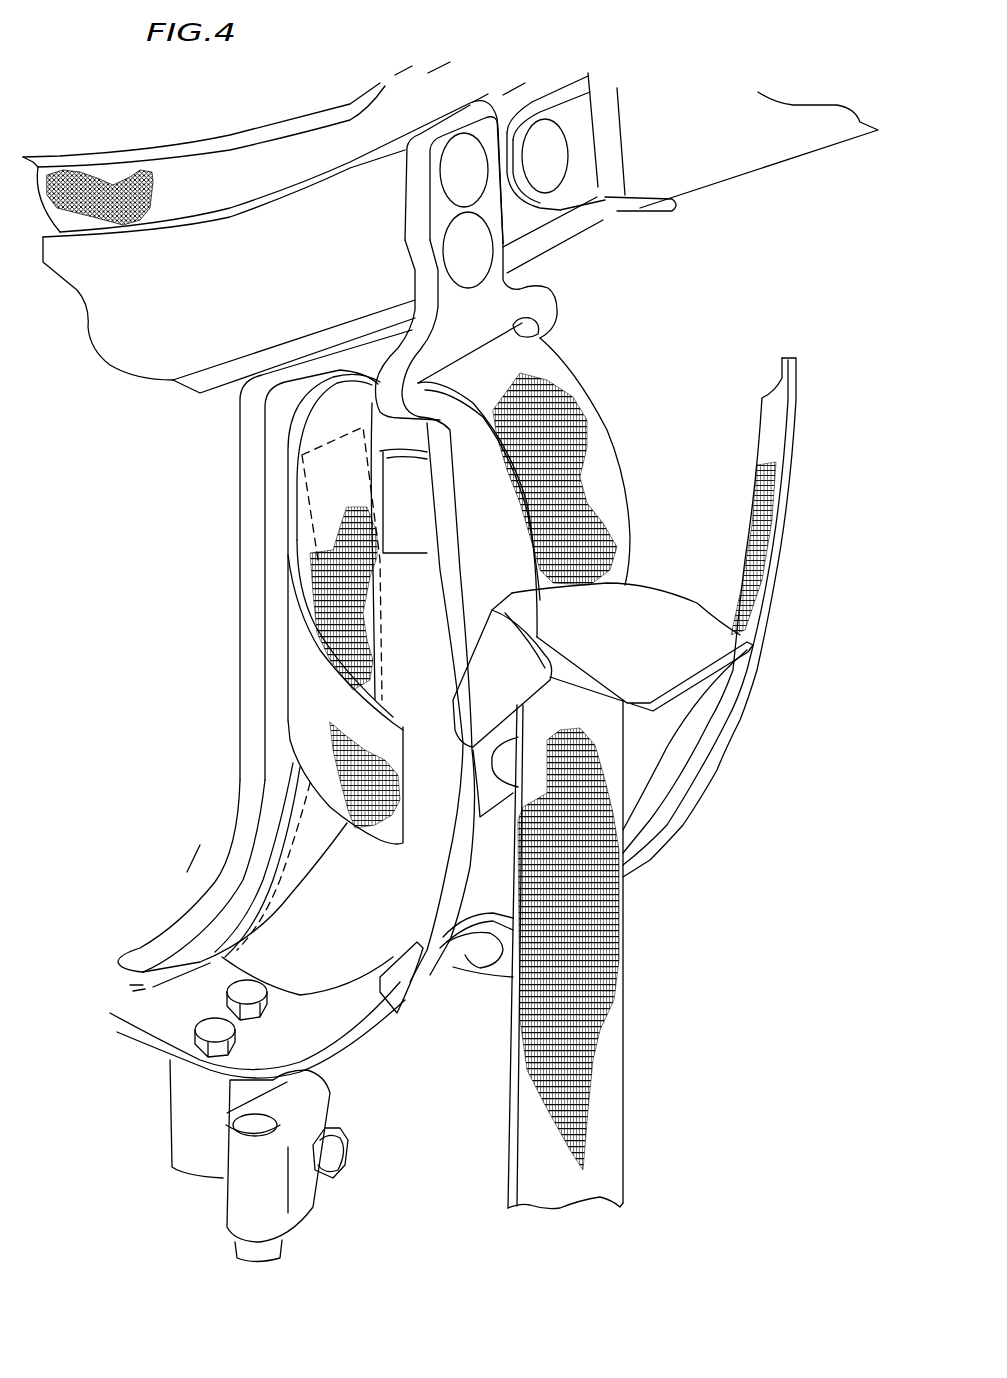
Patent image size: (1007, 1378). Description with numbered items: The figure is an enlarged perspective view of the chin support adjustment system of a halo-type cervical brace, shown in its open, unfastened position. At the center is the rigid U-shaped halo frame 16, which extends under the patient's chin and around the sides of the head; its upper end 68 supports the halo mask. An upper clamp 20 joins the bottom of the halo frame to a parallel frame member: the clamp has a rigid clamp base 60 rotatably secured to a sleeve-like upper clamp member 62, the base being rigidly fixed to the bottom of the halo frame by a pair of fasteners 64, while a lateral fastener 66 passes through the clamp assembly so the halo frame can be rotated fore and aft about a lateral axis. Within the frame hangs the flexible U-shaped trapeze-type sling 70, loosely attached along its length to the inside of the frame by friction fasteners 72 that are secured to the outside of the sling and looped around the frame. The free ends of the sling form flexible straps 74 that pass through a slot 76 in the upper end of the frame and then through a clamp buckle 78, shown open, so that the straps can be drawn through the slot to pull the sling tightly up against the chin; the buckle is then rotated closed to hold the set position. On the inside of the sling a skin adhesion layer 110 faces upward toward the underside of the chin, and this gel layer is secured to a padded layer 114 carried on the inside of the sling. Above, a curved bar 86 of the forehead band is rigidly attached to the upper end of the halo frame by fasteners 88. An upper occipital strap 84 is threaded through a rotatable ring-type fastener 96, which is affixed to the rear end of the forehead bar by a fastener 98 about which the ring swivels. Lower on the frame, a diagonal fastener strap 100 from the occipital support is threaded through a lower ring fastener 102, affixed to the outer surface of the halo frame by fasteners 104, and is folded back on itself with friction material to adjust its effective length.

The U-shaped halo frame 16 is at (344, 1051).
The upper clamp 20 is at (318, 1222).
The clamp base 60 is at (202, 1127).
The upper clamp member 62 is at (242, 1213).
The fasteners 64 is at (222, 1031).
The lateral fastener 66 is at (337, 1153).
The upper end of the halo frame 68 is at (503, 541).
The sling 70 is at (356, 494).
The friction fasteners 72 is at (328, 725).
The flexible straps 74 is at (580, 1025).
The slot 76 is at (532, 325).
The clamp buckle 78 is at (676, 633).
The upper occipital straps 84 is at (756, 160).
The curved bar 86 is at (238, 301).
The fasteners 88 is at (470, 247).
The ring-type fastener 96 is at (655, 212).
The fastener 98 is at (552, 153).
The fastener straps 100 is at (703, 773).
The lower ring fastener 102 is at (485, 985).
The fasteners 104 is at (420, 1000).
The skin adhesion layer 110 is at (252, 607).
The padded layer 114 is at (280, 517).